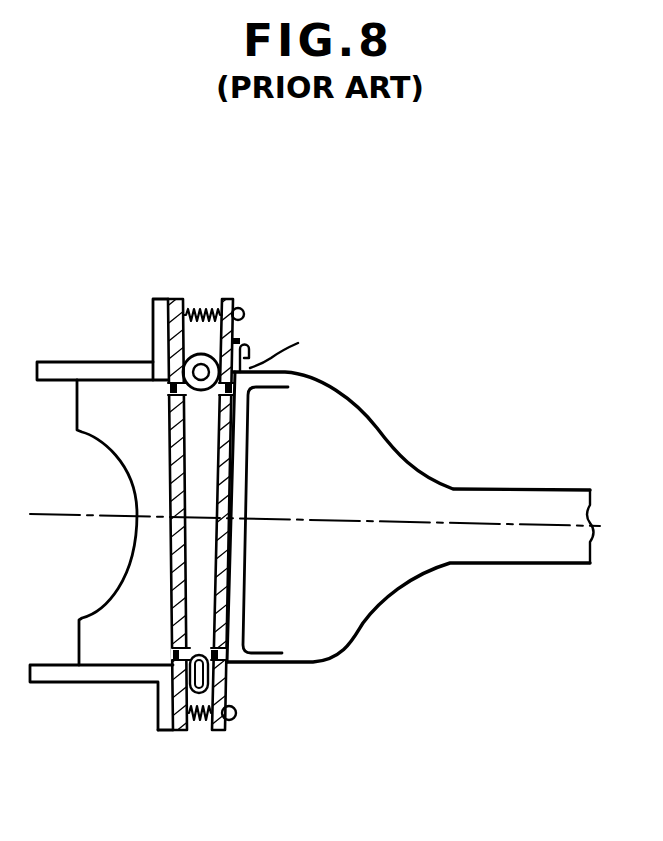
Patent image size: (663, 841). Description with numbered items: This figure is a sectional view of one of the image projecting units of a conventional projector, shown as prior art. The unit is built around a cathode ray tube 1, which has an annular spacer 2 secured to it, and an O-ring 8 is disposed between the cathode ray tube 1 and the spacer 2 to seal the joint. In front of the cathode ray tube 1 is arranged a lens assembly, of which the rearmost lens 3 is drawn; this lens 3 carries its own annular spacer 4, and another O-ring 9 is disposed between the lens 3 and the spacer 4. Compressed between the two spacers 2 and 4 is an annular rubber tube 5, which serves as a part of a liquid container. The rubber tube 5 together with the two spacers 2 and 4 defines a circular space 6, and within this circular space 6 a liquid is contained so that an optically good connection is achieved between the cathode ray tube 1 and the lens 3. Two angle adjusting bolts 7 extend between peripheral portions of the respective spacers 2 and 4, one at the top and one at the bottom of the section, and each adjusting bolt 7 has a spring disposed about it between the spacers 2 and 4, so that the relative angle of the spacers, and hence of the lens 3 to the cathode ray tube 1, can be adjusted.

The cathode ray tube 1 is at (336, 401).
The annular spacer 2 is at (228, 299).
The rearmost lens 3 is at (90, 397).
The annular spacer 4 is at (170, 299).
The annular rubber tube 5 is at (250, 347).
The circular space 6 is at (205, 460).
The angle adjusting bolt 7 is at (244, 310).
The O-ring 8 is at (298, 343).
The O-ring 9 is at (172, 363).